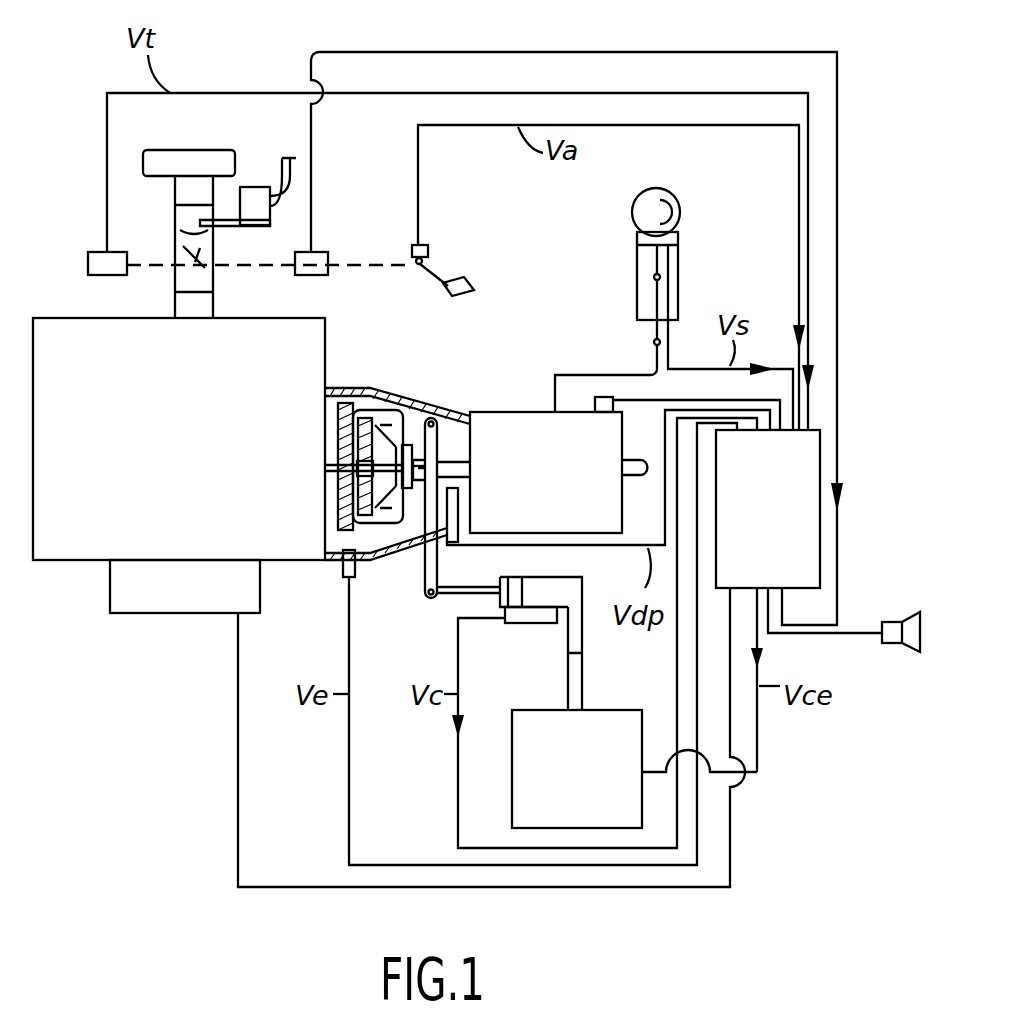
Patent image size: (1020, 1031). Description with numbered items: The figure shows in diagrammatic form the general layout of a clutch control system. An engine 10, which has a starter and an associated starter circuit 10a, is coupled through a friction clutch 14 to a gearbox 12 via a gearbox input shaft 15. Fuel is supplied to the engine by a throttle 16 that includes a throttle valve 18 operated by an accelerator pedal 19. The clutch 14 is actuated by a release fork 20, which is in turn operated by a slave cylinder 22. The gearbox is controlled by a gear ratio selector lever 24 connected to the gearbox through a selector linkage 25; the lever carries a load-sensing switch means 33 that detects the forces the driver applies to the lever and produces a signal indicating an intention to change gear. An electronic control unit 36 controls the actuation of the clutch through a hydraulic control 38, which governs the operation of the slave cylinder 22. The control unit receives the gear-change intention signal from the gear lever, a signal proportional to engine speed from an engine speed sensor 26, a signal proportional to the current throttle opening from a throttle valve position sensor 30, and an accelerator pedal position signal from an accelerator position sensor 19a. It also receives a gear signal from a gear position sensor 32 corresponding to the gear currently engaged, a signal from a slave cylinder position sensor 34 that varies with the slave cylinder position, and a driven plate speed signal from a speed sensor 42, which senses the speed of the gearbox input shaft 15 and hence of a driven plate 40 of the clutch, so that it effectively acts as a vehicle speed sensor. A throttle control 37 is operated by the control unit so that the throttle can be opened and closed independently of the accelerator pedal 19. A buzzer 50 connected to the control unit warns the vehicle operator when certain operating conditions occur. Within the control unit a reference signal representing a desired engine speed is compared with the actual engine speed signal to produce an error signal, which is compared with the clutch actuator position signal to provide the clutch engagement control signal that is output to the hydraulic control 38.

The engine 10 is at (179, 439).
The starter circuit 10a is at (427, 723).
The gearbox 12 is at (558, 472).
The friction clutch 14 is at (358, 388).
The gearbox input shaft 15 is at (463, 468).
The throttle 16 is at (226, 268).
The throttle valve 18 is at (177, 268).
The accelerator pedal 19 is at (450, 278).
The accelerator position sensor 19a is at (430, 248).
The release fork 20 is at (427, 580).
The slave cylinder 22 is at (552, 573).
The gear ratio selector lever 24 is at (680, 265).
The selector linkage 25 is at (555, 374).
The engine speed sensor 26 is at (343, 580).
The throttle valve position sensor 30 is at (95, 256).
The gear position sensor 32 is at (609, 397).
The load-sensing switch means 33 is at (672, 230).
The slave cylinder position sensor 34 is at (548, 627).
The electronic control unit 36 is at (768, 509).
The throttle control 37 is at (330, 252).
The hydraulic control 38 is at (634, 769).
The driven plate 40 is at (378, 402).
The speed sensor 42 is at (460, 502).
The buzzer 50 is at (892, 622).